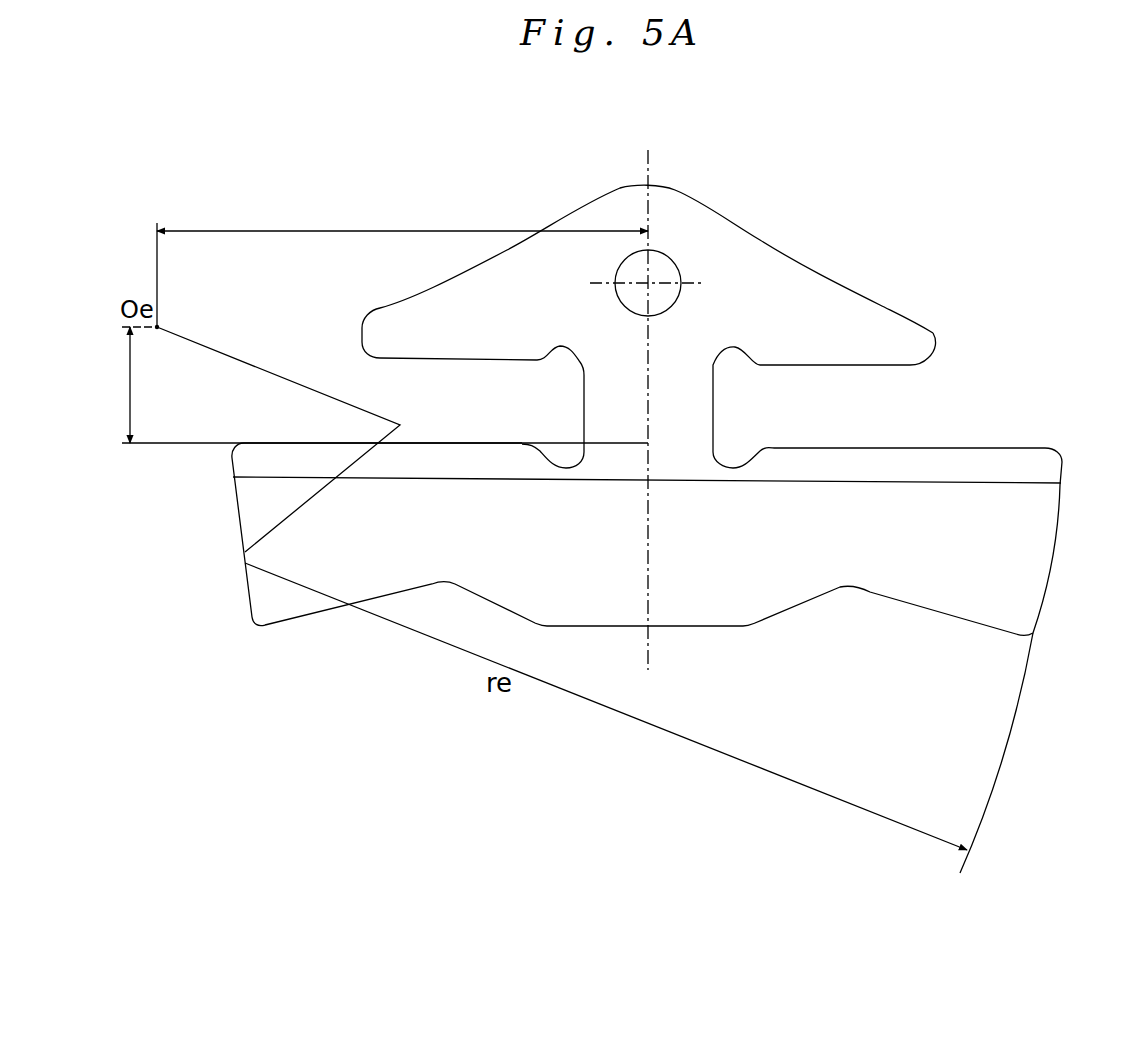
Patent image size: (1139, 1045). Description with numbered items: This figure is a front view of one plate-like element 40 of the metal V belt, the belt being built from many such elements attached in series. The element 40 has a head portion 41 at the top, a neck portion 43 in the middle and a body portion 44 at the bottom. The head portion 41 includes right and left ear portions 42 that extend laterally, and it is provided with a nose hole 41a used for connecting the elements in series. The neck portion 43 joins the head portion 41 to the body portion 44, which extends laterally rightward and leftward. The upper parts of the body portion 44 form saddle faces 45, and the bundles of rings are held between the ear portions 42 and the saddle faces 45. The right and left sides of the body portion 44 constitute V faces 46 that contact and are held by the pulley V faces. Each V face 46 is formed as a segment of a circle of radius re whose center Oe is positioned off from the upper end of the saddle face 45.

The element 40 is at (915, 208).
The head portion 41 is at (688, 207).
The nose hole 41a is at (660, 275).
The ear portions 42 is at (380, 318).
The neck portion 43 is at (698, 412).
The body portion 44 is at (813, 580).
The saddle face 45 is at (902, 448).
The V face 46 is at (1057, 540).